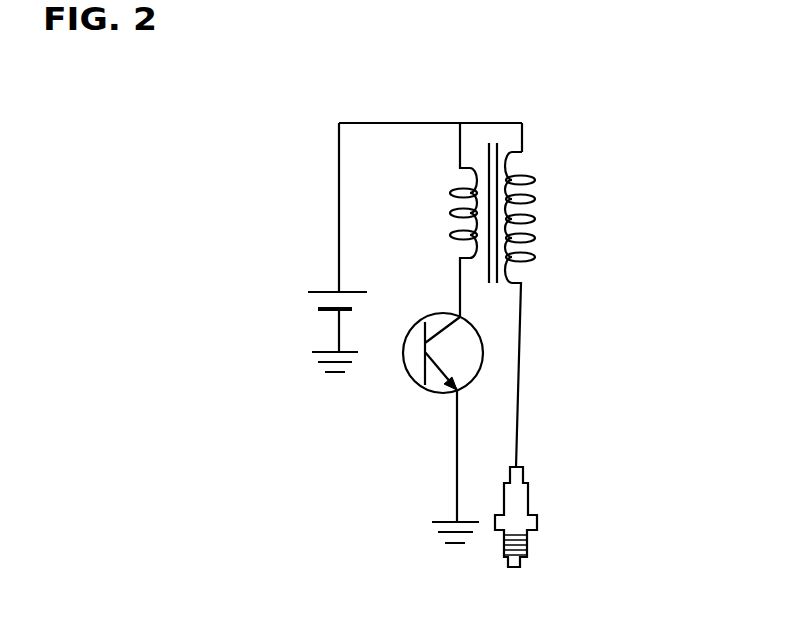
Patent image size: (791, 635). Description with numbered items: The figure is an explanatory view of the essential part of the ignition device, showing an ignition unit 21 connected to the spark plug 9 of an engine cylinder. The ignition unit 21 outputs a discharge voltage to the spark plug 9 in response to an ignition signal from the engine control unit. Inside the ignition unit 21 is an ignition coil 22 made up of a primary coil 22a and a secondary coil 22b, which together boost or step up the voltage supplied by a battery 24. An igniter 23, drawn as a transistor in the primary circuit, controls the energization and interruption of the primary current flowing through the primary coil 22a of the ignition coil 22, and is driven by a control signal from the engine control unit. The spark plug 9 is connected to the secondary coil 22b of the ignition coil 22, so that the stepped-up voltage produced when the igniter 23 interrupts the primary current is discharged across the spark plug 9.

The ignition unit 21 is at (594, 314).
The ignition coil 22 is at (485, 251).
The primary coil 22a is at (447, 225).
The secondary coil 22b is at (531, 230).
The igniter 23 is at (431, 316).
The battery 24 is at (315, 302).
The spark plug 9 is at (528, 507).